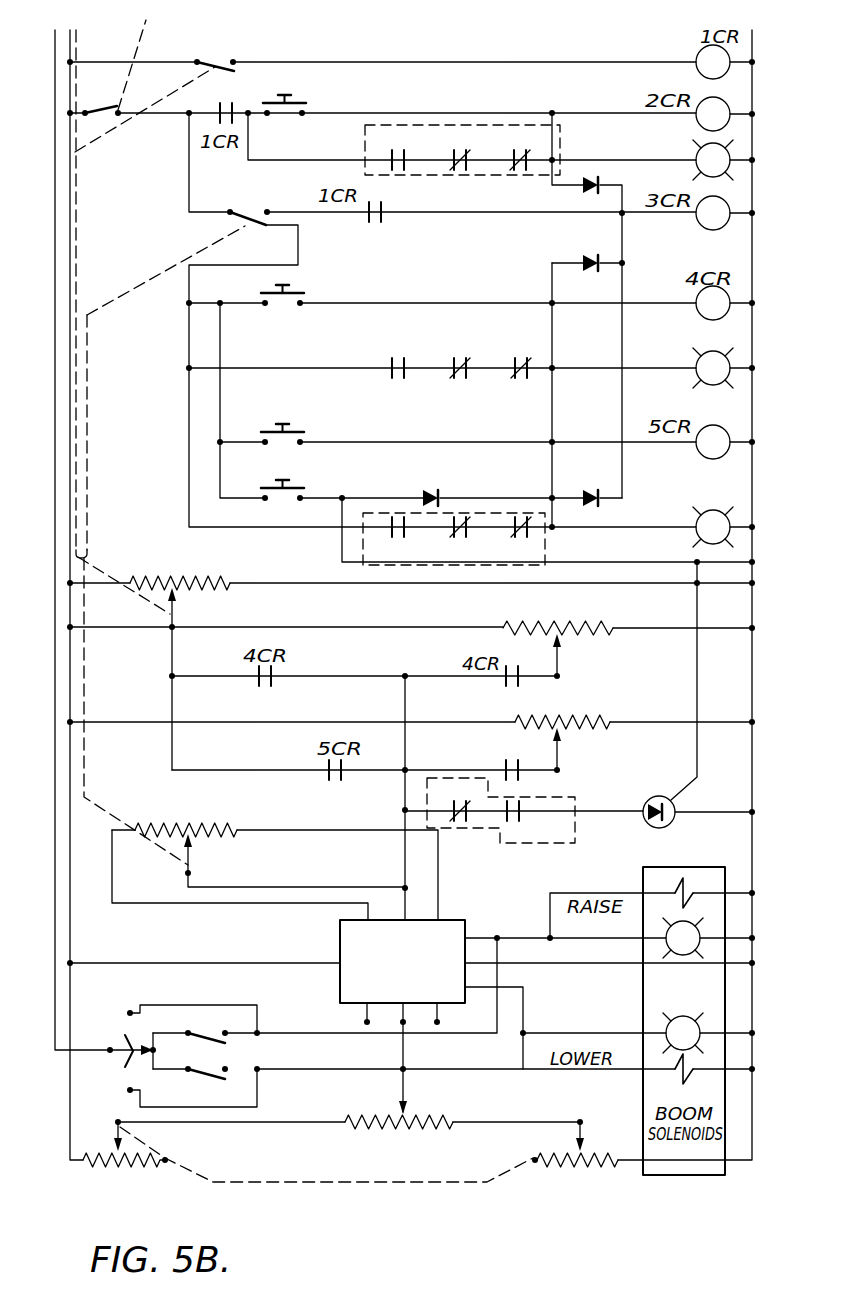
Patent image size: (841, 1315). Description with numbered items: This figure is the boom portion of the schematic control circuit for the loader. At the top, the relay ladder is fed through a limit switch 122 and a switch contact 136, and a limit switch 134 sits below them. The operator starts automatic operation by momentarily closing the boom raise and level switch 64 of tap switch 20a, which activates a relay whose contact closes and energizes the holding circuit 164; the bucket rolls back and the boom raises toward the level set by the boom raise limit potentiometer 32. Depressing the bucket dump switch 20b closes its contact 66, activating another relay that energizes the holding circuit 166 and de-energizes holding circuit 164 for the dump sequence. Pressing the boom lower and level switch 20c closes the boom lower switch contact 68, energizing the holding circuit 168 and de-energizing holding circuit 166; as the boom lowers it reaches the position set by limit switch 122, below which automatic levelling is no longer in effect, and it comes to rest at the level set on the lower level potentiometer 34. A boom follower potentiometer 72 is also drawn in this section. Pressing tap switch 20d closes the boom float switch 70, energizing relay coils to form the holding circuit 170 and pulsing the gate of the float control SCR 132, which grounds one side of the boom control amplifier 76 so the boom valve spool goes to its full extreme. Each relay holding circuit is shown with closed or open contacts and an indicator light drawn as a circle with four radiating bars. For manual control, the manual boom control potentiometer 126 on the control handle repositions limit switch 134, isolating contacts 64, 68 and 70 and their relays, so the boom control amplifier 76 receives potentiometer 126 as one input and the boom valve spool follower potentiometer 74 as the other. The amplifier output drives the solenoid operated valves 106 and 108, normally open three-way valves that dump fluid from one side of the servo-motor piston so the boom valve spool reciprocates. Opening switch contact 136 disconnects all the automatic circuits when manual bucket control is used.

The limit switch 122 is at (208, 56).
The switch contact 136 is at (95, 105).
The limit switch 134 is at (248, 207).
The bucket dump switch pushbutton 66 is at (300, 117).
The bucket dump switch 20b is at (350, 110).
The holding circuit 166 is at (500, 173).
The boom raise and level switch 64 is at (263, 307).
The tap switch 20a is at (364, 303).
The holding circuit 164 is at (333, 360).
The boom lower switch contact 68 is at (267, 445).
The boom lower and level switch 20c is at (366, 434).
The boom float switch 70 is at (296, 503).
The tap switch 20d is at (343, 489).
The holding circuit 168 is at (547, 548).
The boom follower pot 72 is at (187, 593).
The boom raise limit potentiometer 32 is at (577, 645).
The lower level potentiometer 34 is at (575, 740).
The holding circuit 170 is at (518, 843).
The float control SCR 132 is at (677, 797).
The manual boom control potentiometer 126 is at (240, 831).
The boom control amplifier 76 is at (453, 917).
The solenoid operated valve 106 is at (690, 888).
The solenoid operated valve 108 is at (678, 1077).
The boom valve spool follower potentiometer 74 is at (417, 1107).